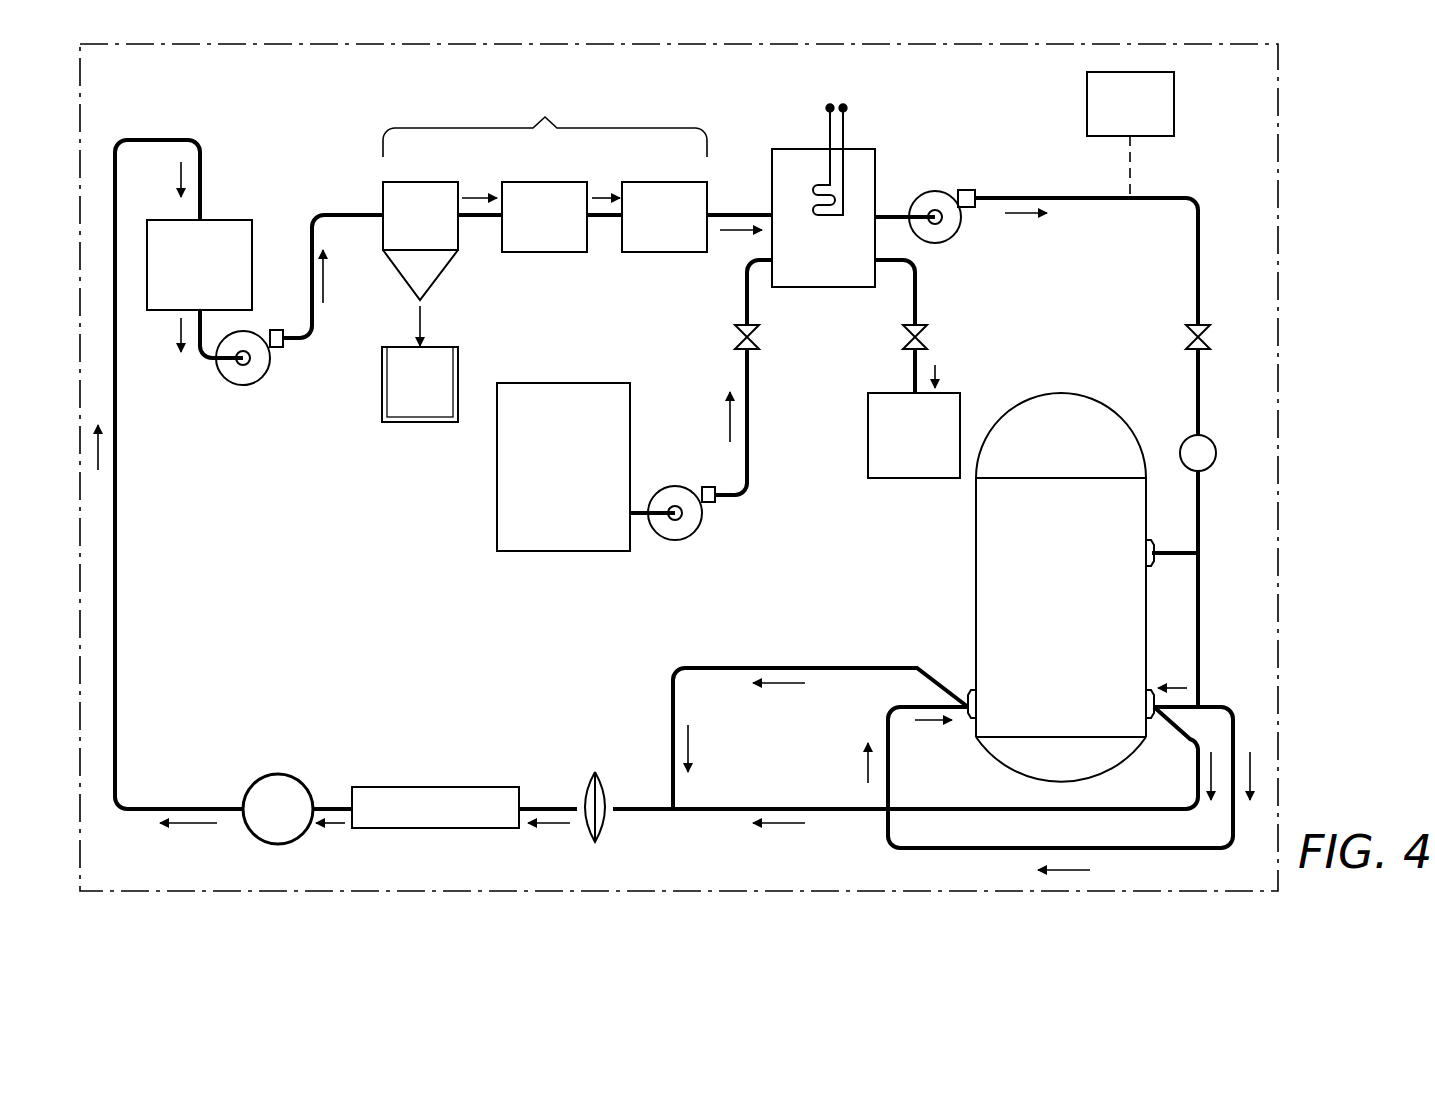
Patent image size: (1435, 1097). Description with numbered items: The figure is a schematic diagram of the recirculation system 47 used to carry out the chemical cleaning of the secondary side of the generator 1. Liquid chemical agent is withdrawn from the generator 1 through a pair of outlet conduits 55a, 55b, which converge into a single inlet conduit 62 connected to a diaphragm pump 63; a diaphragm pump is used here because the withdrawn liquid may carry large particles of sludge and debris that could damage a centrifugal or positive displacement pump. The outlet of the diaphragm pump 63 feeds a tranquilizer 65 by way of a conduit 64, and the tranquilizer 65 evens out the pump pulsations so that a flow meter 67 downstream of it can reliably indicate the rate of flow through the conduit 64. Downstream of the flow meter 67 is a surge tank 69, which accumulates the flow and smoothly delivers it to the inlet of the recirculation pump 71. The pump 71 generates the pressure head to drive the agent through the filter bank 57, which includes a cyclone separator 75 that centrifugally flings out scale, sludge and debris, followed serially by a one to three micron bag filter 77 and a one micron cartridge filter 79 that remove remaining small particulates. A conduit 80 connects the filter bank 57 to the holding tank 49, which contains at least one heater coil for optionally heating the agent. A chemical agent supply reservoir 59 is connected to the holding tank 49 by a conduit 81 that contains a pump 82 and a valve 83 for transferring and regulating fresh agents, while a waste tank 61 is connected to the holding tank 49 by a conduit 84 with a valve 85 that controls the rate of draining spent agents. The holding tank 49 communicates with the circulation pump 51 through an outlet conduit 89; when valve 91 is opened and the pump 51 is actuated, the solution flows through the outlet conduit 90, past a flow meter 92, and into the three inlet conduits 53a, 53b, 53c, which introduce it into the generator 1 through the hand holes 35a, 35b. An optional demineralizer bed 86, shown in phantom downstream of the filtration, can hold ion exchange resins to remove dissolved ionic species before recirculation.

The generator 1 is at (1077, 591).
The hand hole 35a is at (1139, 704).
The hand hole 35b is at (976, 704).
The recirculation system 47 is at (156, 134).
The holding tank 49 is at (837, 287).
The circulation pump 51 is at (953, 191).
The inlet conduit 53a is at (1152, 700).
The inlet conduit 53b is at (888, 775).
The inlet conduit 53c is at (1172, 547).
The outlet conduit 55a is at (1180, 746).
The outlet conduit 55b is at (865, 668).
The filter bank 57 is at (545, 122).
The chemical agent supply reservoir 59 is at (529, 551).
The waste tank 61 is at (908, 478).
The inlet conduit 62 is at (652, 805).
The diaphragm pump 63 is at (585, 790).
The conduit 64 is at (545, 805).
The tranquilizer 65 is at (472, 787).
The flow meter 67 is at (270, 773).
The surge tank 69 is at (227, 220).
The recirculation pump 71 is at (245, 385).
The cyclone separator 75 is at (405, 182).
The bag filter 77 is at (526, 182).
The cartridge filter 79 is at (676, 182).
The conduit 80 is at (762, 212).
The conduit 81 is at (749, 445).
The pump 82 is at (682, 539).
The valve 83 is at (735, 334).
The conduit 84 is at (918, 291).
The valve 85 is at (924, 346).
The demineralizer bed 86 is at (1174, 109).
The outlet conduit 89 is at (896, 215).
The outlet conduit 90 is at (1085, 198).
The valve 91 is at (1208, 347).
The flow meter 92 is at (1210, 467).